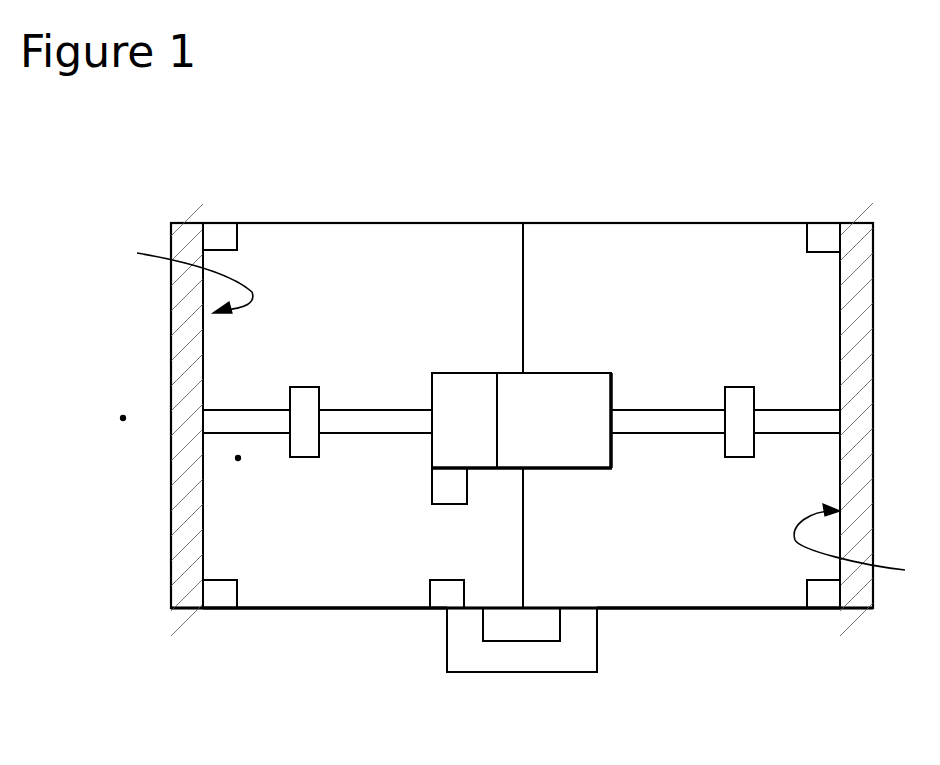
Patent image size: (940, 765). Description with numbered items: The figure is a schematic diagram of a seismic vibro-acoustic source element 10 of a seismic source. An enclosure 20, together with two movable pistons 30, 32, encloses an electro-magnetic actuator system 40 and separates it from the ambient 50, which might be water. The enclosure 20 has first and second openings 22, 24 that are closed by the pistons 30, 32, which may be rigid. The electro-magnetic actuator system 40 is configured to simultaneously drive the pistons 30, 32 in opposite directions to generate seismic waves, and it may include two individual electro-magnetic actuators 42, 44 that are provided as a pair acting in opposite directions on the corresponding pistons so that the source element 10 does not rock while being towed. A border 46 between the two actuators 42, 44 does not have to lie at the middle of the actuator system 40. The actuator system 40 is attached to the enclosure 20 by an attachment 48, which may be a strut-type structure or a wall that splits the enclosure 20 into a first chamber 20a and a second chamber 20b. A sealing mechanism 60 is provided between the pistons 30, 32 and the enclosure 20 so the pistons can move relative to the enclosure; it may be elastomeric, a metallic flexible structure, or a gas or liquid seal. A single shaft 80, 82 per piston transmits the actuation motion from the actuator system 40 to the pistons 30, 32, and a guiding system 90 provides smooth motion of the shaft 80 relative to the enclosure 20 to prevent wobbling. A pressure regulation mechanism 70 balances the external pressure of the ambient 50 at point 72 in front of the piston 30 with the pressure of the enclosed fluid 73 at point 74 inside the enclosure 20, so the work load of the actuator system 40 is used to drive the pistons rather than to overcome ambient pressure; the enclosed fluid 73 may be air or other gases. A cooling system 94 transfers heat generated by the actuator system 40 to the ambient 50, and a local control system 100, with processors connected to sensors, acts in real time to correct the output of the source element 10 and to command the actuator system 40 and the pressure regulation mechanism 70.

The seismic vibro-acoustic source element 10 is at (543, 106).
The enclosure 20 is at (303, 223).
The first chamber 20a is at (275, 572).
The second chamber 20b is at (722, 583).
The first opening 22 is at (177, 275).
The second opening 24 is at (867, 545).
The piston 30 is at (171, 327).
The piston 32 is at (857, 293).
The electro-magnetic actuator system 40 is at (563, 373).
The electro-magnetic actuator 42 is at (456, 397).
The electro-magnetic actuator 44 is at (580, 395).
The border 46 is at (495, 400).
The attachment 48 is at (523, 265).
The ambient 50 is at (918, 449).
The sealing mechanism 60 is at (219, 233).
The pressure regulation mechanism 70 is at (528, 628).
The point 72 is at (120, 418).
The enclosed fluid 73 is at (345, 283).
The point 74 is at (240, 460).
The shaft 80 is at (360, 433).
The shaft 82 is at (677, 433).
The guiding system 90 is at (307, 395).
The cooling system 94 is at (450, 504).
The local control system 100 is at (460, 660).